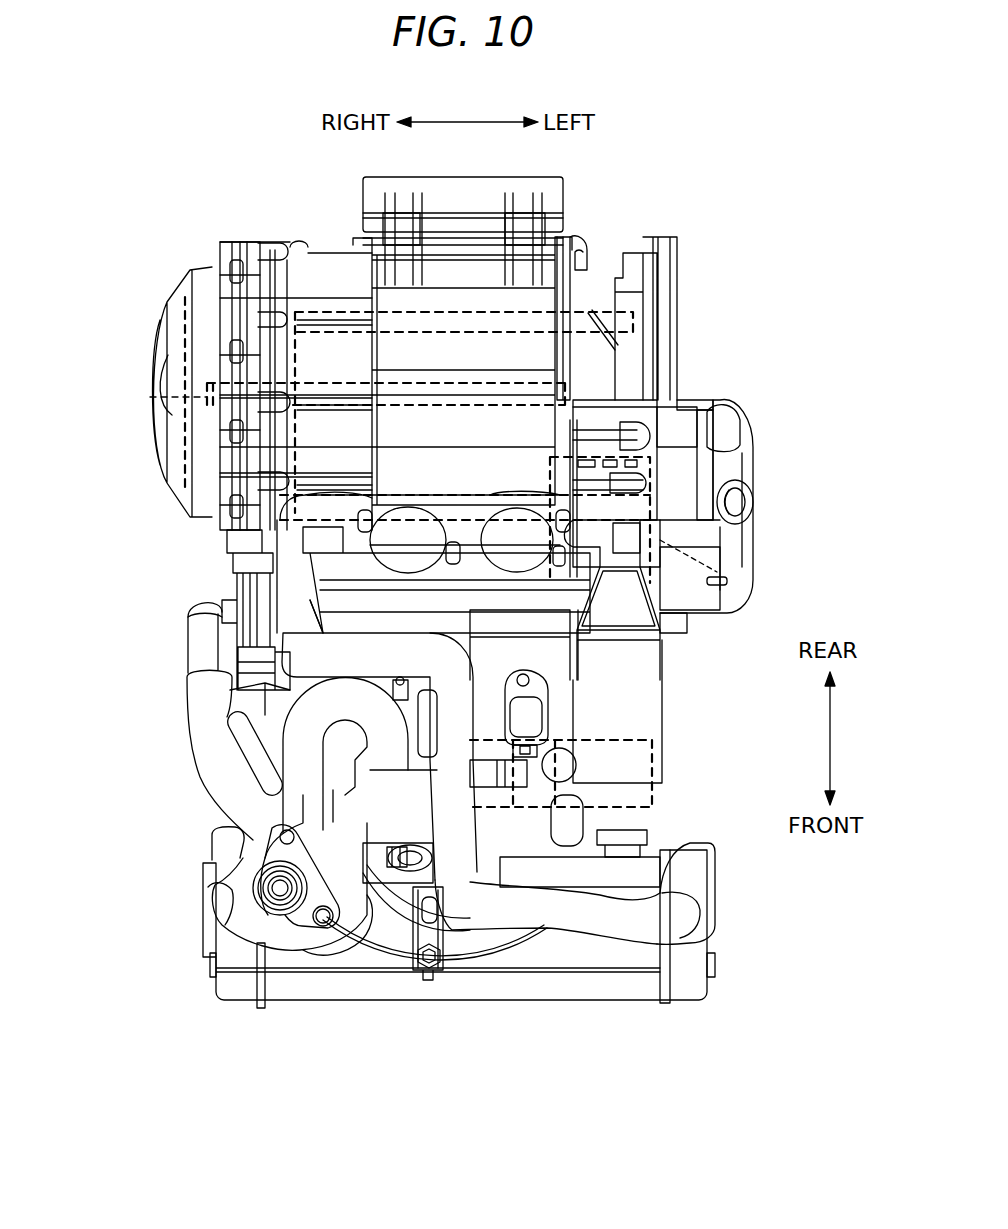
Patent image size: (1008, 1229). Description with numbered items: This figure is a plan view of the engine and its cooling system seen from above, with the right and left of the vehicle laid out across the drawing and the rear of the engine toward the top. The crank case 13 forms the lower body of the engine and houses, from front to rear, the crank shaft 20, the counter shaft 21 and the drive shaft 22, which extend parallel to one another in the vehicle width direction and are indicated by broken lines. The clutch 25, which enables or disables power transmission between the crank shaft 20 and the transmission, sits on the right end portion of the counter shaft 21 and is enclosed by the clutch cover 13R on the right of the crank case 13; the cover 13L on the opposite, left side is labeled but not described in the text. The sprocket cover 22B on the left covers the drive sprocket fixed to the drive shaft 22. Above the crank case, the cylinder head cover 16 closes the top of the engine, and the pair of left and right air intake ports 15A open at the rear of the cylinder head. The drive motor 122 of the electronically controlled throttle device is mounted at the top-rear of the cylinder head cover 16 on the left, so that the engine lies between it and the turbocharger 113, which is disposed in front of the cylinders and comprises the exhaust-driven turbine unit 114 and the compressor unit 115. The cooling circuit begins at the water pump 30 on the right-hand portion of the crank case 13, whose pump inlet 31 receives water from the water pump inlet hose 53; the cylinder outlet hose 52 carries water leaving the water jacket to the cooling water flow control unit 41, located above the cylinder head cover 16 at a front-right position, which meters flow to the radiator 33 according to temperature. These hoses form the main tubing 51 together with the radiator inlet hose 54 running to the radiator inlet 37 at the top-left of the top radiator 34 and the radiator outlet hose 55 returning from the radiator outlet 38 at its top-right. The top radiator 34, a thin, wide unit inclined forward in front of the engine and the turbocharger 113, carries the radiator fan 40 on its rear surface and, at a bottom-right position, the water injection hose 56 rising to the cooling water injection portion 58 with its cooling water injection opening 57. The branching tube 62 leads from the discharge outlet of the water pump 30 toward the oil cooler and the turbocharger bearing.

The crank case 13 is at (330, 272).
The drive shaft 22 is at (317, 303).
The counter shaft 21 is at (195, 397).
The crank shaft 20 is at (230, 506).
The clutch 25 is at (165, 370).
The clutch cover 13R is at (172, 338).
The left case cover 13L is at (753, 525).
The sprocket cover 22B is at (663, 313).
The air intake ports 15A is at (500, 513).
The cylinder head cover 16 is at (632, 655).
The drive motor 122 is at (742, 573).
The water pump 30 is at (237, 567).
The pump inlet 31 is at (205, 603).
The cylinder outlet hose 52 is at (298, 633).
The water pump inlet hose 53 is at (210, 700).
The cooling water flow control unit 41 is at (347, 778).
The water injection hose 56 is at (220, 843).
The cooling water injection opening 57 is at (240, 867).
The cooling water injection portion 58 is at (278, 888).
The radiator outlet 38 is at (215, 925).
The radiator outlet hose 55 is at (290, 933).
The main tubing 51 is at (318, 958).
The radiator fan 40 is at (383, 920).
The top radiator 34 is at (450, 985).
The radiator inlet hose 54 is at (553, 910).
The radiator inlet 37 is at (703, 922).
The branching tube 62 is at (570, 823).
The radiator 33 is at (633, 1012).
The turbine unit 114 is at (520, 703).
The compressor unit 115 is at (603, 740).
The turbocharger 113 is at (660, 762).